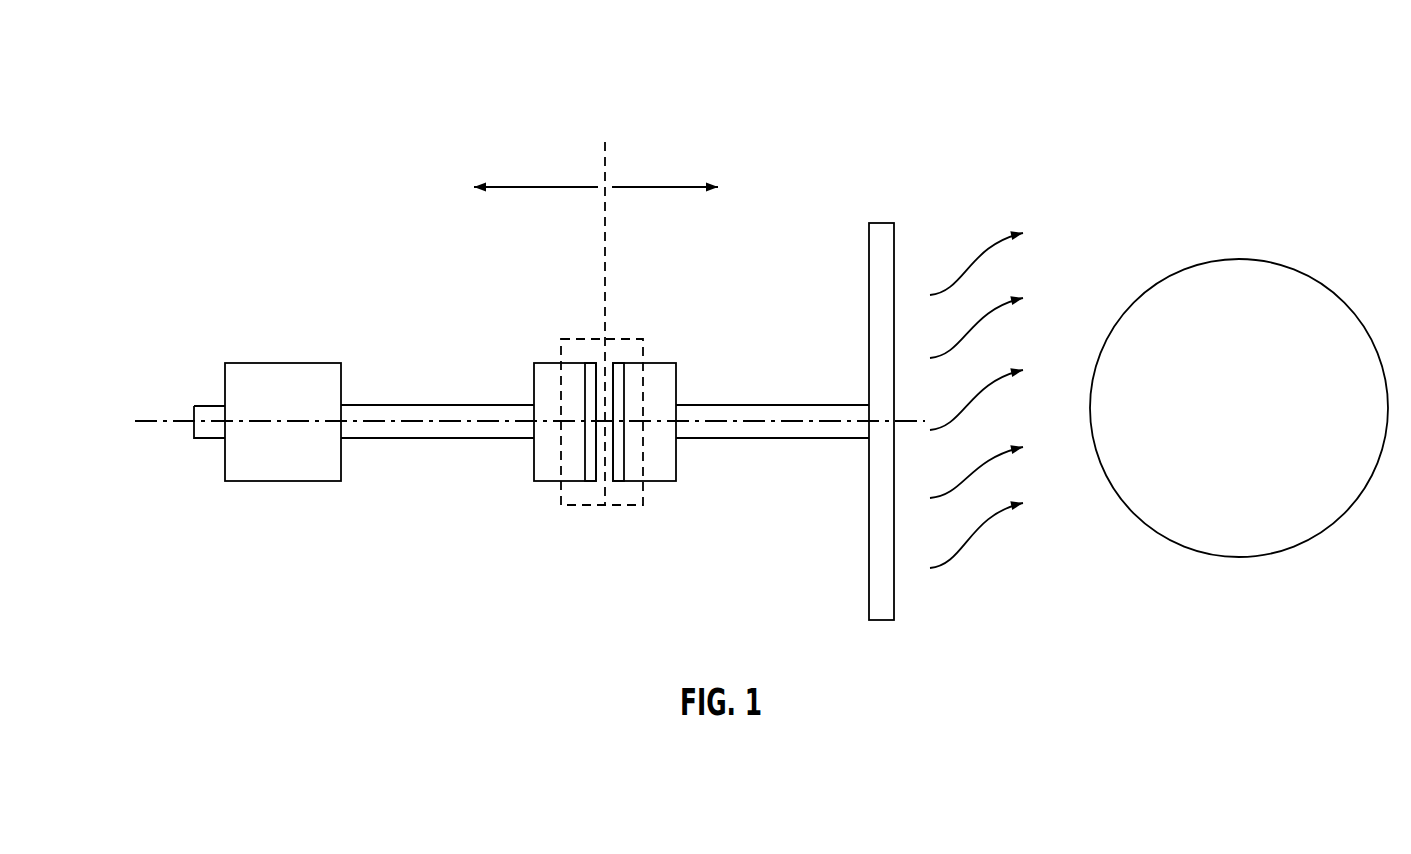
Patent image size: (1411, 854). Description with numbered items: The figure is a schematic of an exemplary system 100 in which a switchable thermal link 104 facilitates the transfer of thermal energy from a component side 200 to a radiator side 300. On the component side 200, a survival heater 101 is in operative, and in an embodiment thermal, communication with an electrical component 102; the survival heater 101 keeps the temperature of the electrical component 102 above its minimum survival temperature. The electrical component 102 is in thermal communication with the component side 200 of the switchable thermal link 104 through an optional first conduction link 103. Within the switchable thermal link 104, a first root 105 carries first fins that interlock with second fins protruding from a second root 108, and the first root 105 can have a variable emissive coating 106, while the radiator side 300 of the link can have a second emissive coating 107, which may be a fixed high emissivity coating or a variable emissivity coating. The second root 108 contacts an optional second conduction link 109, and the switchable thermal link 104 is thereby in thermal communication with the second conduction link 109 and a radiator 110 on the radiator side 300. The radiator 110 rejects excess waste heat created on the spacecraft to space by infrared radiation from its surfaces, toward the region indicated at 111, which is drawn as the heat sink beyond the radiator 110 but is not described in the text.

The system 100 is at (170, 62).
The component side 200 is at (423, 183).
The radiator side 300 is at (760, 180).
The survival heater 101 is at (190, 401).
The electrical component 102 is at (253, 455).
The first conduction link 103 is at (378, 425).
The switchable thermal link 104 is at (605, 335).
The first root 105 is at (558, 453).
The variable emissive coating 106 is at (589, 375).
The second emissive coating 107 is at (619, 374).
The second root 108 is at (662, 464).
The second conduction link 109 is at (800, 424).
The radiator 110 is at (887, 590).
The radiated beam 111 is at (1286, 517).